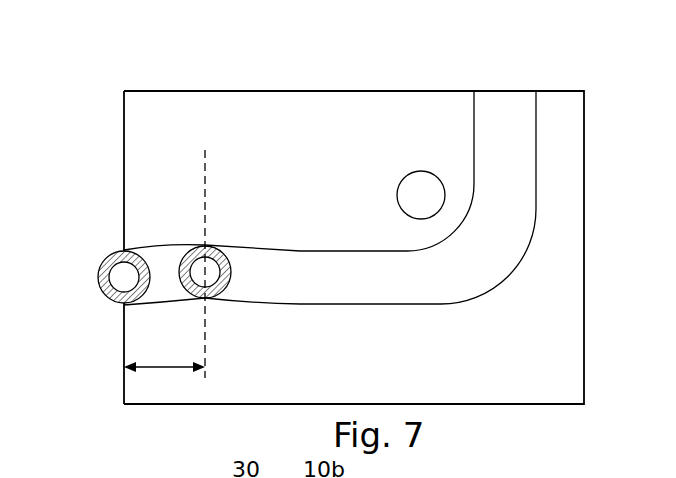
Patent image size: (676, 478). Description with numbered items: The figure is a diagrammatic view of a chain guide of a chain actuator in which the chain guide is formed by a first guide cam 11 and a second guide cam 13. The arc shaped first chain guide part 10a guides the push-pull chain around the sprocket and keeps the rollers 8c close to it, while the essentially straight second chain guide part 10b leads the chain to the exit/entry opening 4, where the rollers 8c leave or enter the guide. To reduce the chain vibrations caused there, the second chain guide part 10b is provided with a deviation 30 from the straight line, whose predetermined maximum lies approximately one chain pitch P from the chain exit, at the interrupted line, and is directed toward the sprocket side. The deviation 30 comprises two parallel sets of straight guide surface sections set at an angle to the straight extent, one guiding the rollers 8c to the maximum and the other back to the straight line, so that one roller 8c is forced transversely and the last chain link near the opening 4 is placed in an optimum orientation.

The exit/entry opening 4 is at (104, 311).
The rollers 8c is at (197, 248).
The first chain guide part 10a is at (515, 211).
The second chain guide part 10b is at (300, 270).
The first guide cam 11 is at (552, 375).
The second guide cam 13 is at (153, 155).
The deviation 30 is at (234, 190).